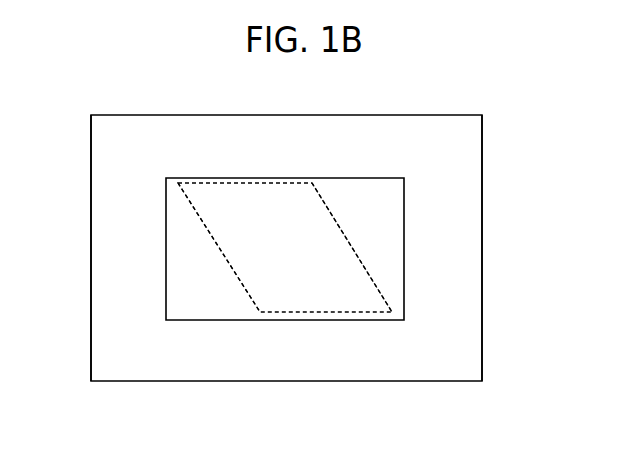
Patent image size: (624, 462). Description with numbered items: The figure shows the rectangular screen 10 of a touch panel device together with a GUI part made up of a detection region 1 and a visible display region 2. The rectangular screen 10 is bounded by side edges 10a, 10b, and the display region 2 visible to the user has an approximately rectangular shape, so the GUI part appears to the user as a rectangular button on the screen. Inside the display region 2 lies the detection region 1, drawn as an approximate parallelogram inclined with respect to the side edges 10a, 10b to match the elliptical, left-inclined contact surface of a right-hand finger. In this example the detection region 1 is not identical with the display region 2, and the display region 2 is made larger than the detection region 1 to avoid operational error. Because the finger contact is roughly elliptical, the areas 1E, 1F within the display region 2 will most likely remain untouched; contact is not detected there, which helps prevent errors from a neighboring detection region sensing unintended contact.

The detection region 1 is at (293, 182).
The area within the display region 1E is at (178, 289).
The area within the display region 1F is at (380, 188).
The display region 2 is at (404, 210).
The rectangular screen 10 is at (302, 381).
The side edge of the rectangular screen 10a is at (91, 213).
The side edge of the rectangular screen 10b is at (482, 271).